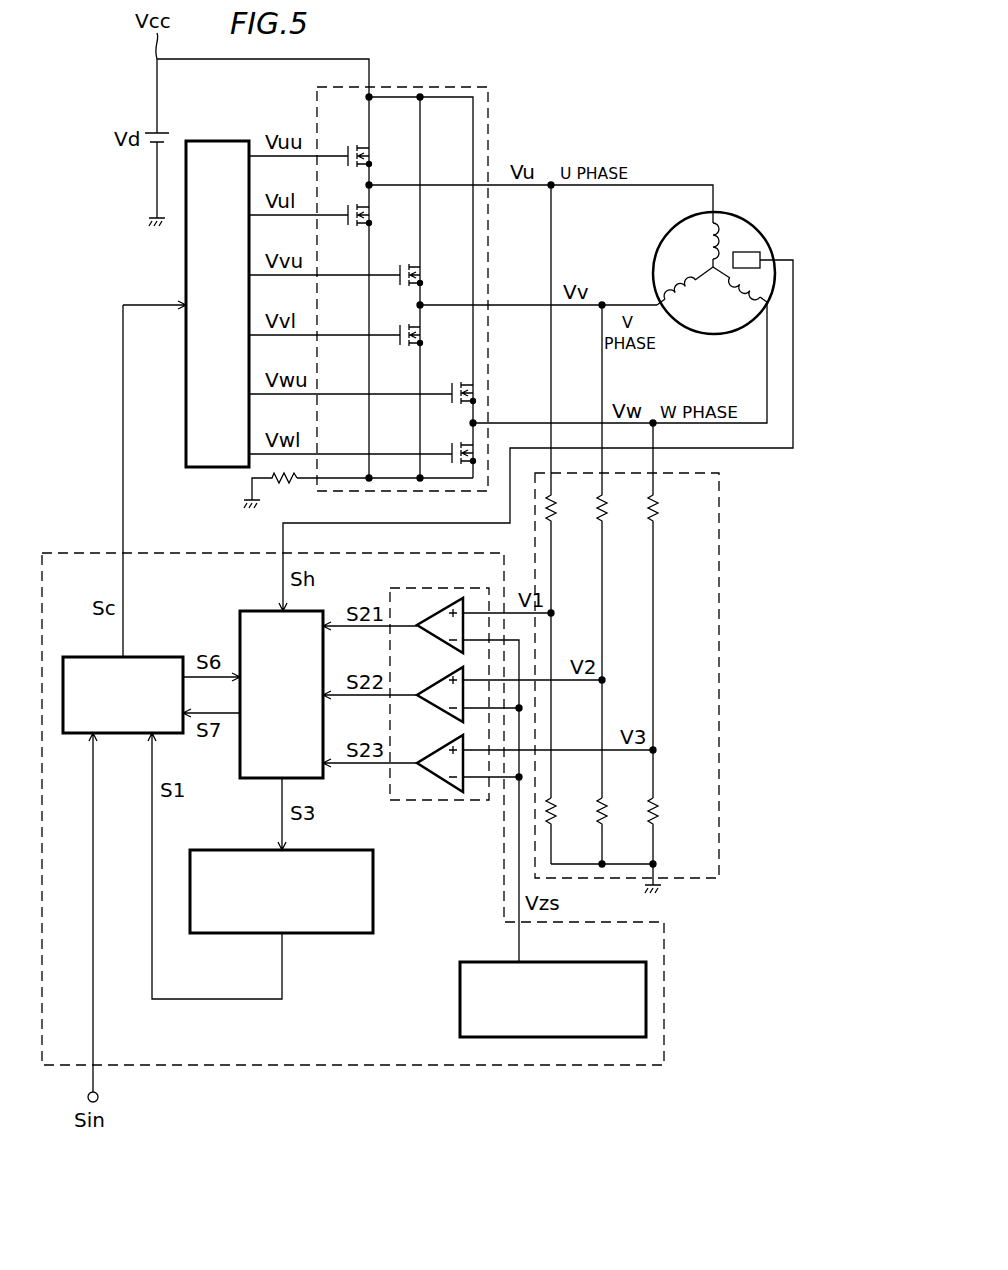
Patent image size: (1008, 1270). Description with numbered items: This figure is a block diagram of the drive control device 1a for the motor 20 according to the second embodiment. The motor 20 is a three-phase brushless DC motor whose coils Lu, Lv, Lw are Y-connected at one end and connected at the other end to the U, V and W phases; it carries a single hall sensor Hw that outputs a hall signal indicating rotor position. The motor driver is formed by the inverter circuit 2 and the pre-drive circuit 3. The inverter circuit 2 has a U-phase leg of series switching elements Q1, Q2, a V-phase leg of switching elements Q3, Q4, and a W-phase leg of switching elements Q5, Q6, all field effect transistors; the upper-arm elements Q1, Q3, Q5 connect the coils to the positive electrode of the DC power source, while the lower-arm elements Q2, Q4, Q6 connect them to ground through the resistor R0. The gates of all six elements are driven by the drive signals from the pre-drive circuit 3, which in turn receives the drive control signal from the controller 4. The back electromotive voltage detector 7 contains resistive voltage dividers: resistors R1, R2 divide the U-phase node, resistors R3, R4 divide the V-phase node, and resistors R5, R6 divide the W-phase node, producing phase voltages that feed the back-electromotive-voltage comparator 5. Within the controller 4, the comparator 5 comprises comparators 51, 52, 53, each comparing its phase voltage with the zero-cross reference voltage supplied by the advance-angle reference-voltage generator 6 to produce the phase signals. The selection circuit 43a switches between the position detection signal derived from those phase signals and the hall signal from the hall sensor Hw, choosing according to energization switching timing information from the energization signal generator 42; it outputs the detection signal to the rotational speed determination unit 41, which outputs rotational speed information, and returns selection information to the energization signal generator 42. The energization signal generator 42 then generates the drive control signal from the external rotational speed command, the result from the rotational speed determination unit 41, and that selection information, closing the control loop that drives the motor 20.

The drive control device 1a is at (546, 93).
The inverter circuit 2 is at (446, 87).
The pre-drive circuit 3 is at (216, 141).
The controller 4 is at (347, 1078).
The back-electromotive-voltage comparator 5 is at (456, 588).
The advance-angle reference-voltage generator 6 is at (597, 962).
The back electromotive voltage detector 7 is at (725, 586).
The motor 20 is at (738, 213).
The rotational speed determination unit 41 is at (331, 851).
The energization signal generator 42 is at (142, 657).
The selection circuit 43a is at (241, 611).
The comparator 51 is at (438, 611).
The comparator 52 is at (438, 679).
The comparator 53 is at (438, 749).
The switching element Q1 is at (352, 142).
The switching element Q2 is at (352, 201).
The switching element Q3 is at (403, 262).
The switching element Q4 is at (403, 321).
The switching element Q5 is at (456, 380).
The switching element Q6 is at (456, 440).
The resistor R0 is at (270, 494).
The resistor R1 is at (568, 491).
The resistor R2 is at (568, 831).
The resistor R3 is at (619, 551).
The resistor R4 is at (619, 831).
The resistor R5 is at (670, 610).
The resistor R6 is at (670, 831).
The coil Lu is at (708, 240).
The coil Lv is at (684, 320).
The coil Lw is at (745, 320).
The hall sensor Hw is at (747, 252).